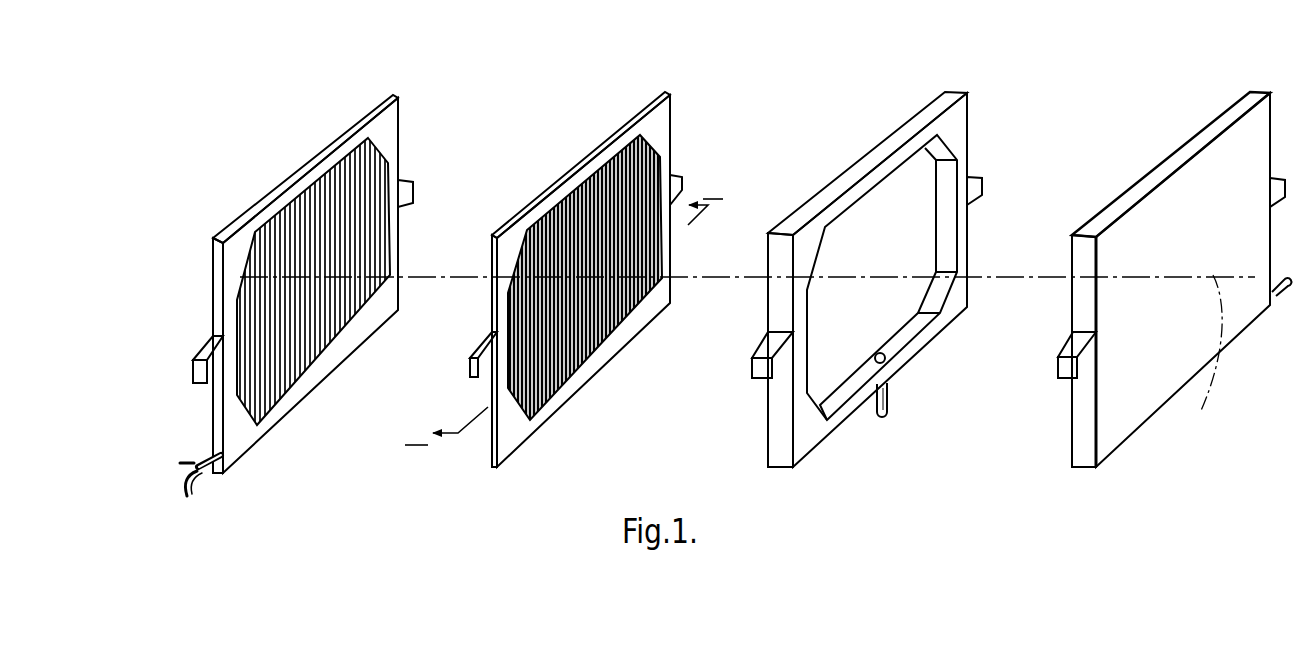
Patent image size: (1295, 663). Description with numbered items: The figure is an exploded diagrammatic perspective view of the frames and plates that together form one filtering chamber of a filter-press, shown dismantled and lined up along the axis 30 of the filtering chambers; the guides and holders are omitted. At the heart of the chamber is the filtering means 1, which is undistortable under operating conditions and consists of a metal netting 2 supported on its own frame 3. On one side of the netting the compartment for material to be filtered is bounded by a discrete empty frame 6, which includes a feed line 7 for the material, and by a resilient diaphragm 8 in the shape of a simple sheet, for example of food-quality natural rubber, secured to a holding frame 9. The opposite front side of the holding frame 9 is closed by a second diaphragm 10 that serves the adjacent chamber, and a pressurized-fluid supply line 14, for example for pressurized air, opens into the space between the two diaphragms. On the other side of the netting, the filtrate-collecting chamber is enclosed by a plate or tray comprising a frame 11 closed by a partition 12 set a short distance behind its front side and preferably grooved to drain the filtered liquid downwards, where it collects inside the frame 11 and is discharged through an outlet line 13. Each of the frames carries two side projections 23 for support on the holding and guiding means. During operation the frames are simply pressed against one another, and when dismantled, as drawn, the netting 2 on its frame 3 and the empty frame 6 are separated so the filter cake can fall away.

The filtering means 1 is at (575, 272).
The metal netting 2 is at (640, 188).
The frame 3 is at (670, 130).
The empty frame 6 is at (842, 183).
The feed line 7 is at (890, 403).
The resilient diaphragm 8 is at (1171, 260).
The holding frame 9 is at (1162, 173).
The second diaphragm 10 is at (1210, 177).
The frame 11 is at (326, 148).
The partition 12 is at (360, 168).
The outlet line 13 is at (220, 456).
The pressurized-fluid supply line 14 is at (1278, 297).
The side projections 23 is at (981, 178).
The axis 30 is at (1204, 361).